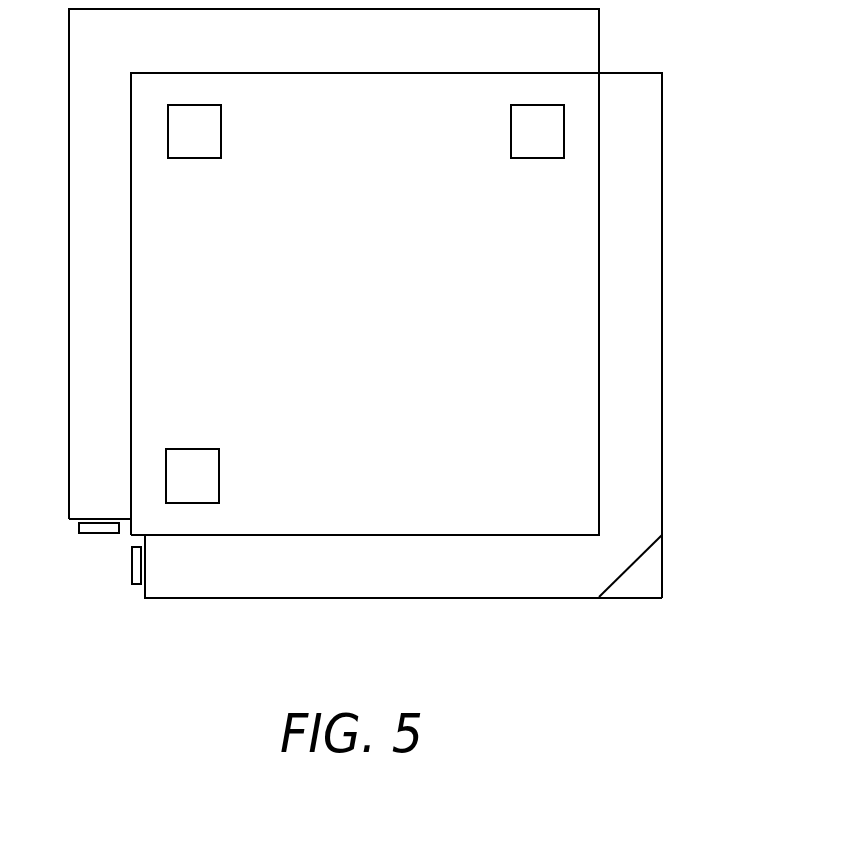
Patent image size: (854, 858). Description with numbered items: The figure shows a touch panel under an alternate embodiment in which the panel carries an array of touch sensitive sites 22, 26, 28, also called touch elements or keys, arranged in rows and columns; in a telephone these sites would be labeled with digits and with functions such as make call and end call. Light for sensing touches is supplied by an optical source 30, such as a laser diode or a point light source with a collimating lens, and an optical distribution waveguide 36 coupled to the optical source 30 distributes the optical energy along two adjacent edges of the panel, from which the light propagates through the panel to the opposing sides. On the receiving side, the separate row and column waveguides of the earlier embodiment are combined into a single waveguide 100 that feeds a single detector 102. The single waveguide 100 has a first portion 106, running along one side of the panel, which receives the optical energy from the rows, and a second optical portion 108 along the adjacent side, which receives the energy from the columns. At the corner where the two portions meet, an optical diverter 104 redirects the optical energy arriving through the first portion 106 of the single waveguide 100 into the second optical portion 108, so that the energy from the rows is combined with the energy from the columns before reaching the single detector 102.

The touch sensitive site 22 is at (221, 130).
The touch sensitive site 26 is at (219, 476).
The touch sensitive site 28 is at (511, 128).
The optical source 30 is at (89, 536).
The optical distribution waveguide 36 is at (69, 265).
The single waveguide 100 is at (706, 376).
The single detector 102 is at (130, 575).
The optical diverter 104 is at (623, 571).
The first portion of the waveguide 106 is at (662, 230).
The second optical portion 108 is at (403, 598).